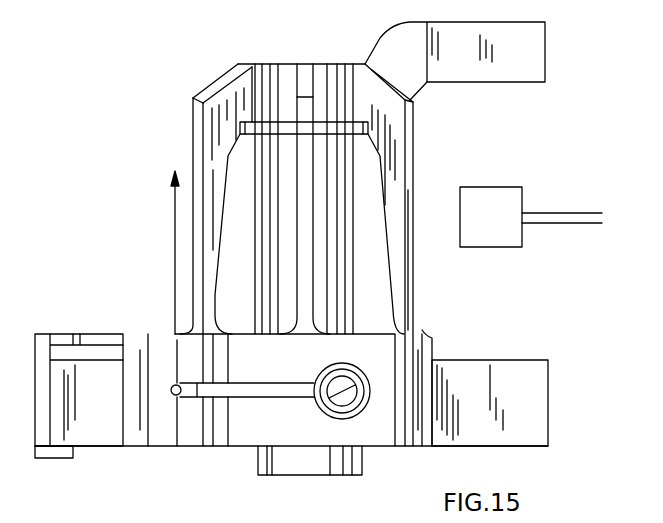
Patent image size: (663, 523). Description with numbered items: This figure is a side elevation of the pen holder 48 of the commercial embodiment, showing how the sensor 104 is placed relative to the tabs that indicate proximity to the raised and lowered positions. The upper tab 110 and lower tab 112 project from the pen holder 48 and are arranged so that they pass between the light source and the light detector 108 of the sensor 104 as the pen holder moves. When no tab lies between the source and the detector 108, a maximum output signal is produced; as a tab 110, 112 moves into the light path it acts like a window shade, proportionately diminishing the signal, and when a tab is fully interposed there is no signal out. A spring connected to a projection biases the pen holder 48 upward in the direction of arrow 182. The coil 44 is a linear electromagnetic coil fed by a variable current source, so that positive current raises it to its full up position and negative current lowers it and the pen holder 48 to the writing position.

The pen holder 48 is at (216, 82).
The arrow 182 is at (175, 303).
The upper tab 110 is at (538, 72).
The lower tab 112 is at (532, 430).
The third sensor assembly 104 is at (528, 188).
The light detector 108 is at (500, 239).
The coil 44 is at (280, 463).